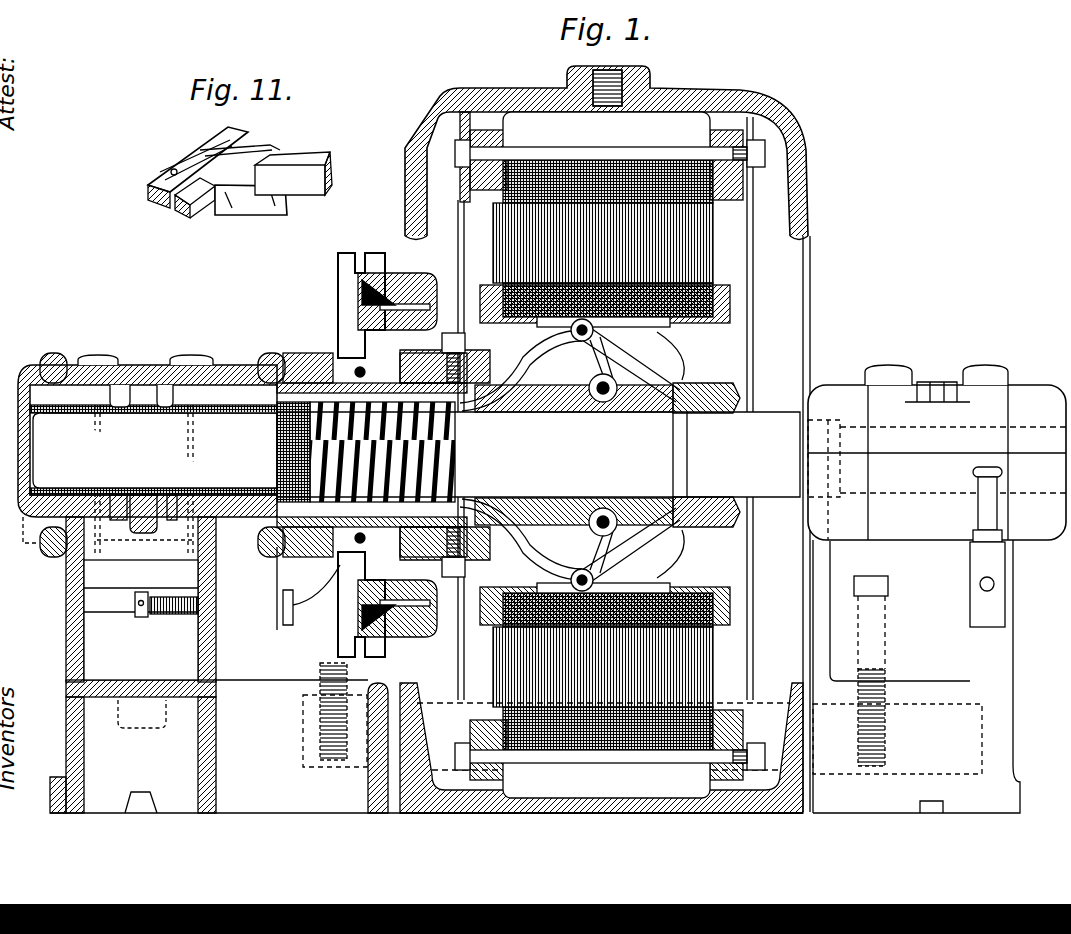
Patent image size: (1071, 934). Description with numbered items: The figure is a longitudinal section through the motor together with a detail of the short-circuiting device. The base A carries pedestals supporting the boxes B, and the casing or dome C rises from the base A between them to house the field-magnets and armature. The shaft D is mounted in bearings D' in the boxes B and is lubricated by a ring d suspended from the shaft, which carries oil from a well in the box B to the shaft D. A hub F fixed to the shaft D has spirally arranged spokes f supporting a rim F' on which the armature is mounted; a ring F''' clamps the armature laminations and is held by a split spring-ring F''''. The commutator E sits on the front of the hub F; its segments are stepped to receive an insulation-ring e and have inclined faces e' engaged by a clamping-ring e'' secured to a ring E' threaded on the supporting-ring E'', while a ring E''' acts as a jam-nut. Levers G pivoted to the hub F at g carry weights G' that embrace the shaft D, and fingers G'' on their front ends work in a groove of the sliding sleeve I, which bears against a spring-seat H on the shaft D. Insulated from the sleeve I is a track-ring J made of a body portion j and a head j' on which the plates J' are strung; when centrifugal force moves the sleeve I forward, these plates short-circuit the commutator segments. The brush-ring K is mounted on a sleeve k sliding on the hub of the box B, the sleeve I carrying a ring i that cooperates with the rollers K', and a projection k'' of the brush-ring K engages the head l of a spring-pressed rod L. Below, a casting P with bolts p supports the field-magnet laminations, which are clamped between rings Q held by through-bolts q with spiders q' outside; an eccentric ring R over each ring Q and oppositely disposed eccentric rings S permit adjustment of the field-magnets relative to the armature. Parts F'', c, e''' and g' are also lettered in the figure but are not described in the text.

In FIG. 1, the casing C is at (405, 168).
In FIG. 1, the clamping-rings Q is at (765, 199).
In FIG. 1, the spiders q' is at (751, 457).
In FIG. 1, the split spring-ring F'''' is at (755, 458).
In FIG. 1, the eccentric rings S is at (702, 776).
In FIG. 1, the eccentric ring R is at (752, 778).
In FIG. 1, the through-bolts q is at (596, 132).
In FIG. 1, the jam-nut ring E''' is at (436, 450).
In FIG. 1, the clamping ring F''' is at (548, 266).
In FIG. 1, the frame plate F'' is at (475, 454).
In FIG. 1, the ring E' is at (446, 442).
In FIG. 1, the supporting-ring E'' is at (458, 433).
In FIG. 1, the commutator E is at (321, 289).
In FIG. 1, the clamping-ring e'' is at (318, 316).
In FIG. 1, the insulation-ring e is at (345, 326).
In FIG. 1, the inclined faces e' is at (368, 450).
In FIG. 1, the connecting rod e''' is at (331, 614).
In FIG. 1, the sleeve k is at (243, 451).
In FIG. 1, the brush-ring K is at (289, 419).
In FIG. 1, the rollers K' is at (325, 361).
In FIG. 1, the track-ring J is at (371, 372).
In FIG. 11, the track-ring J is at (187, 218).
In FIG. 1, the plates J' is at (369, 534).
In FIG. 11, the plates J' is at (284, 169).
In FIG. 1, the fingers G'' is at (539, 461).
In FIG. 1, the spokes f is at (576, 460).
In FIG. 1, the rim F' is at (701, 452).
In FIG. 1, the bearings D' is at (147, 454).
In FIG. 1, the oil passage c is at (242, 398).
In FIG. 1, the shaft D is at (416, 454).
In FIG. 1, the spring-seat H is at (490, 468).
In FIG. 1, the sliding sleeve I is at (412, 452).
In FIG. 1, the hub F is at (605, 406).
In FIG. 1, the pivot g is at (608, 424).
In FIG. 1, the lower pivot g' is at (594, 542).
In FIG. 1, the levers G is at (651, 494).
In FIG. 1, the weights G' is at (754, 457).
In FIG. 1, the ring d is at (190, 548).
In FIG. 1, the projection k'' is at (259, 573).
In FIG. 1, the ring i is at (308, 588).
In FIG. 1, the spring-pressed rod L is at (262, 612).
In FIG. 1, the head l is at (283, 616).
In FIG. 1, the boxes B is at (58, 634).
In FIG. 1, the base A is at (225, 665).
In FIG. 1, the bolts p is at (333, 766).
In FIG. 1, the casting P is at (418, 746).
In FIG. 11, the body portion j is at (181, 190).
In FIG. 11, the head j' is at (247, 217).